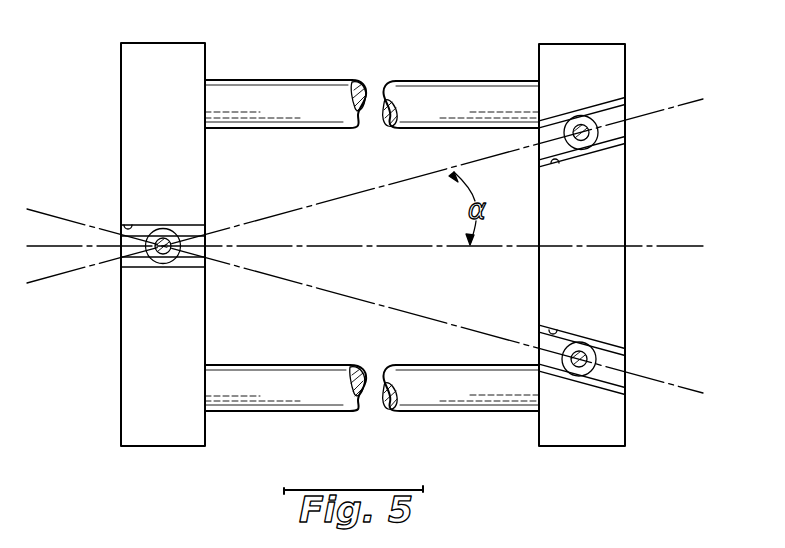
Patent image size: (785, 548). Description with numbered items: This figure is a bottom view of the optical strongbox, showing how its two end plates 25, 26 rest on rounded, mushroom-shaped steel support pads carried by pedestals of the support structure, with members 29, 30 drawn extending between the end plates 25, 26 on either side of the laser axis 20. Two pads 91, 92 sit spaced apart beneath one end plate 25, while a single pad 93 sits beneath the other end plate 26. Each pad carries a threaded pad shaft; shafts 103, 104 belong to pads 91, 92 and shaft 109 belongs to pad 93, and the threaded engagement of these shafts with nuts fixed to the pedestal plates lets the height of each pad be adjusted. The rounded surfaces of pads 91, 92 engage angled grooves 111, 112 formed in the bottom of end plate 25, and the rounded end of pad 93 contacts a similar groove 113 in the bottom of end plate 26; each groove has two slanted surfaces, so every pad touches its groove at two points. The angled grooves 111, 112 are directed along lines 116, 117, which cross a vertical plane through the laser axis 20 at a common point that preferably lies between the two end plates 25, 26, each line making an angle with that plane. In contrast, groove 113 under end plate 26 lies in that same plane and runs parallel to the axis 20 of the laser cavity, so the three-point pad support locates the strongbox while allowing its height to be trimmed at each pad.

The laser axis 20 is at (672, 246).
The end plate 25 is at (592, 44).
The end plate 26 is at (186, 43).
The upper guide rod 29 is at (310, 80).
The lower guide rod 30 is at (300, 411).
The support pad 91 is at (571, 118).
The support pad 92 is at (584, 376).
The support pad 93 is at (154, 262).
The pad shaft 103 is at (585, 139).
The pad shaft 104 is at (580, 352).
The pad shaft 109 is at (166, 254).
The angled groove 111 is at (555, 166).
The angled groove 112 is at (553, 329).
The groove 113 is at (126, 226).
The line 116 is at (334, 198).
The line 117 is at (337, 294).